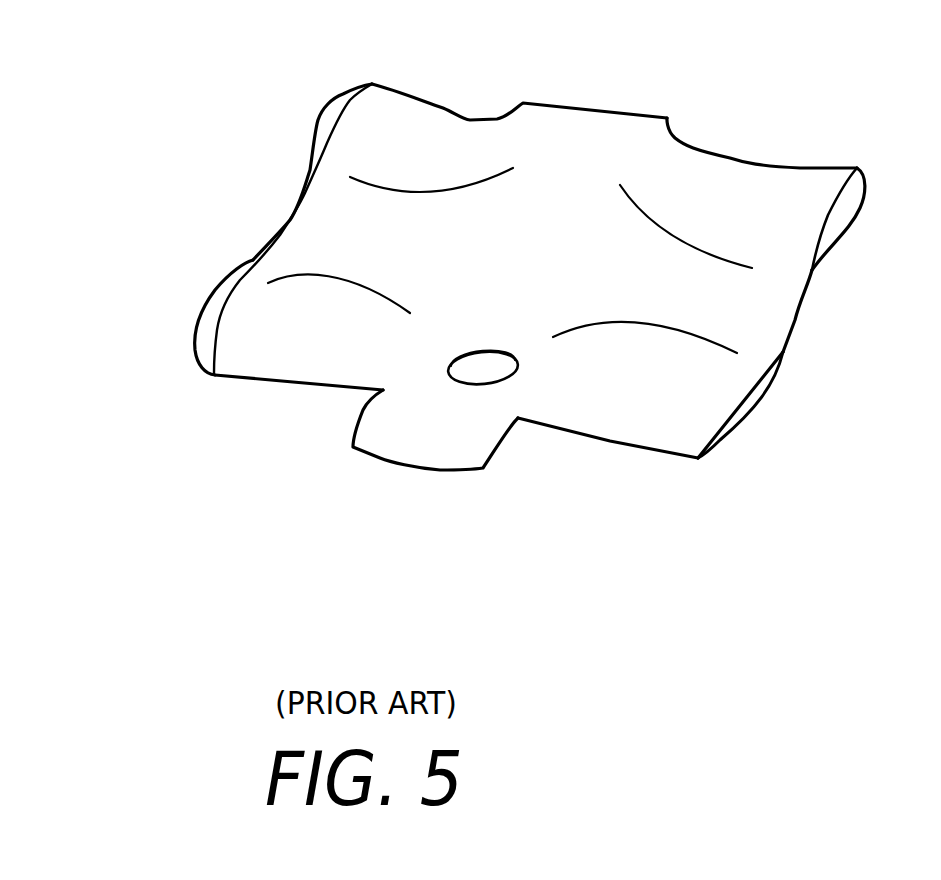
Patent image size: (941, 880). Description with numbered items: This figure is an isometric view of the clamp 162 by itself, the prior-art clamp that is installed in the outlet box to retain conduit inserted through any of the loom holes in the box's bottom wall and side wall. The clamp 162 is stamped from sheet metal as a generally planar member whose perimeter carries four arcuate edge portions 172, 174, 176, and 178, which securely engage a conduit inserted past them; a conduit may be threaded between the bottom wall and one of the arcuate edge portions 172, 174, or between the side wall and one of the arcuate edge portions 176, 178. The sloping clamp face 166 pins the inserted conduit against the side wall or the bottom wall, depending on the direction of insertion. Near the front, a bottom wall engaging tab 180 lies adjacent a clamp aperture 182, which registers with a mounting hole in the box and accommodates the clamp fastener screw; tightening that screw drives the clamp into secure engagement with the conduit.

The clamp 162 is at (70, 47).
The clamp face 166 is at (320, 220).
The arcuate edge portion 172 is at (288, 392).
The arcuate edge portion 174 is at (625, 443).
The arcuate edge portion 176 is at (444, 98).
The arcuate edge portion 178 is at (761, 153).
The bottom wall engaging tab 180 is at (432, 432).
The clamp aperture 182 is at (483, 375).